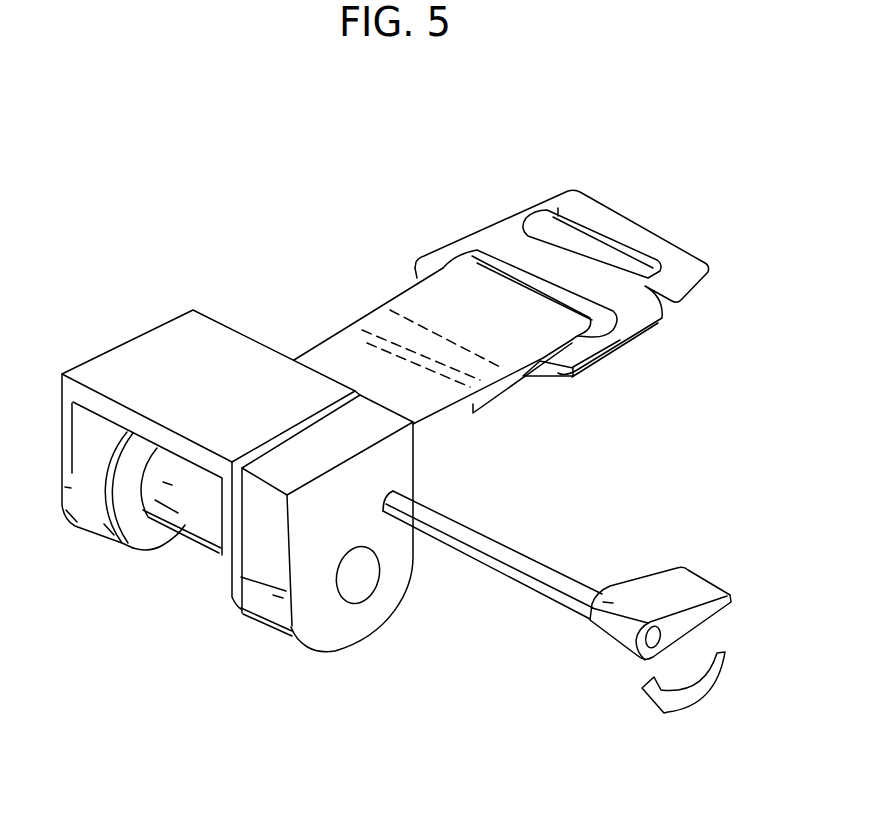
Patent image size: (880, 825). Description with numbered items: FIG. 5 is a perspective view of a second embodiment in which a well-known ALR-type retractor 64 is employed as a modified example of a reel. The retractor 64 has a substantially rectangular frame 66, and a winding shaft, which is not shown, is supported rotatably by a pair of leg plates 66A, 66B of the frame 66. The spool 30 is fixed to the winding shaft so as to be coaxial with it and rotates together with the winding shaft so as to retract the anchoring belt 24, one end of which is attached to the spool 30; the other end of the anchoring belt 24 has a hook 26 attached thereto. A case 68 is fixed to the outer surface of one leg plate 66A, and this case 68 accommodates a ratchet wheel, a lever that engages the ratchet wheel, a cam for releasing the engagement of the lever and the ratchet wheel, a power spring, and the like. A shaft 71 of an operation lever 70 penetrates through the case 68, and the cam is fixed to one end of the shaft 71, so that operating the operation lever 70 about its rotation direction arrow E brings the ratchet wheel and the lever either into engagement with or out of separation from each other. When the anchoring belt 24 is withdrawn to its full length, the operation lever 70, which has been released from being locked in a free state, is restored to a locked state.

The anchoring belt 24 is at (372, 350).
The hook 26 is at (558, 190).
The spool 30 is at (196, 520).
The retractor 64 is at (245, 268).
The frame 66 is at (166, 358).
The leg plate 66A is at (227, 604).
The leg plate 66B is at (72, 529).
The case 68 is at (381, 622).
The operation lever 70 is at (660, 588).
The shaft 71 is at (515, 558).
The rotation direction arrow E is at (693, 713).